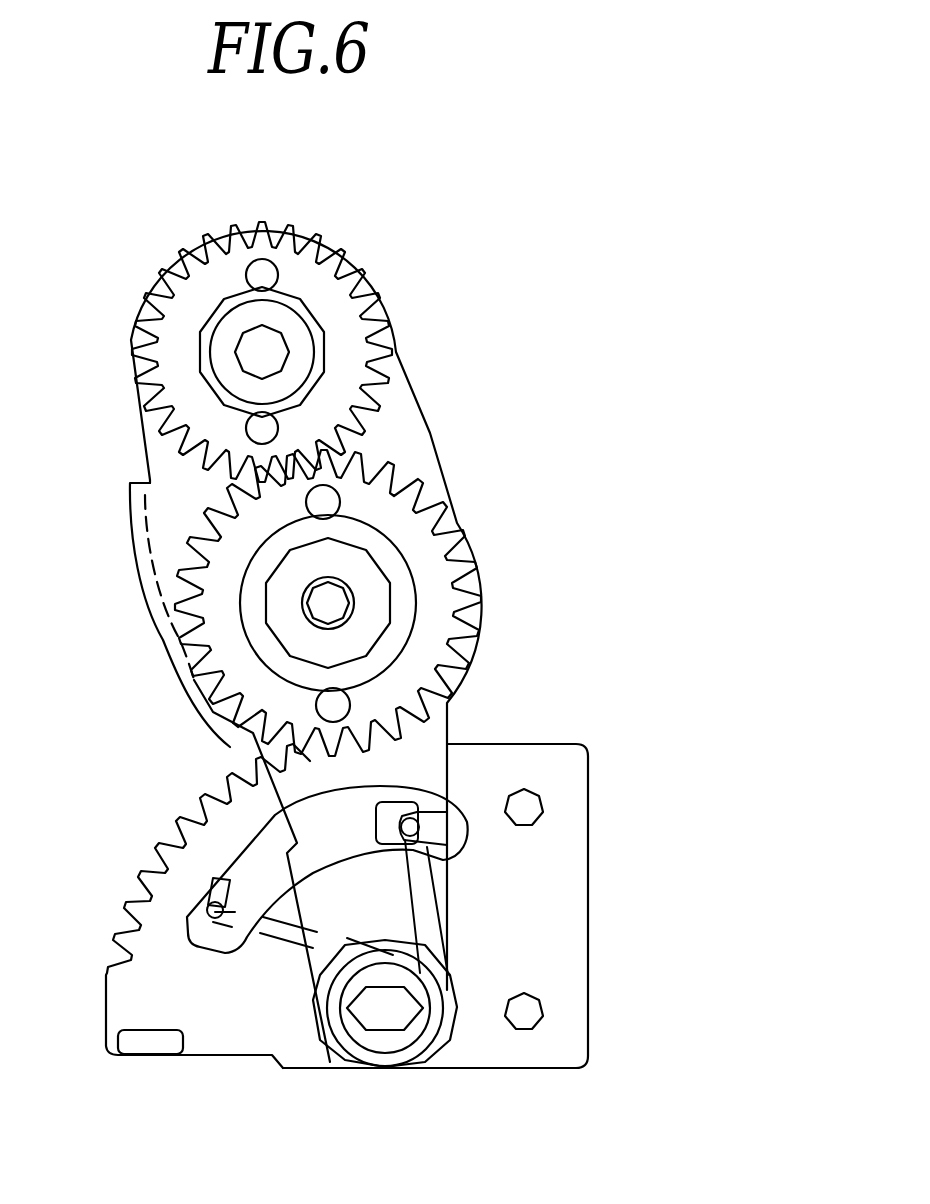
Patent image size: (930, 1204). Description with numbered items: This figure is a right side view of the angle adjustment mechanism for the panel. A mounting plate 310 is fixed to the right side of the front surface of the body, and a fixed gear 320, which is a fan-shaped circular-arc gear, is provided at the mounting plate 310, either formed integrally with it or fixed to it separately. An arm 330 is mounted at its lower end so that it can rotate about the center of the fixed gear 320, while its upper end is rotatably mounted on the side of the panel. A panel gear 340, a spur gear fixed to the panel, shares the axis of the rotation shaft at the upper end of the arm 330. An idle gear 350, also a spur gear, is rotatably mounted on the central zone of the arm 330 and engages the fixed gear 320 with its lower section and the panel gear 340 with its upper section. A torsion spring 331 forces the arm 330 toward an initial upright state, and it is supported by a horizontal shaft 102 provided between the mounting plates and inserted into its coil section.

The panel gear 340 is at (330, 298).
The idle gear 350 is at (438, 613).
The arm 330 is at (432, 430).
The mounting plate 310 is at (502, 772).
The fixed gear 320 is at (177, 823).
The torsion spring 331 is at (408, 1055).
The horizontal shaft 102 is at (333, 1068).